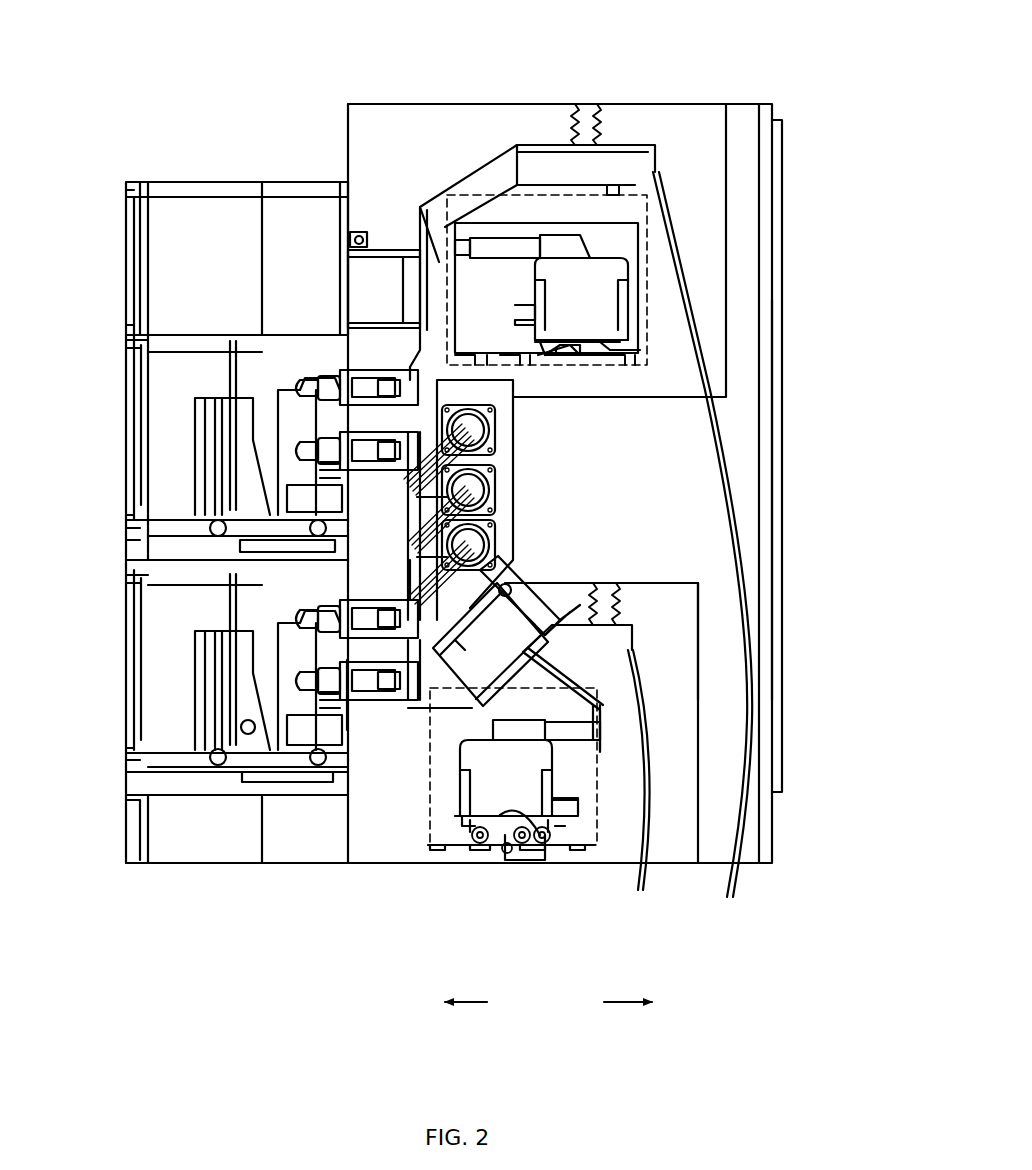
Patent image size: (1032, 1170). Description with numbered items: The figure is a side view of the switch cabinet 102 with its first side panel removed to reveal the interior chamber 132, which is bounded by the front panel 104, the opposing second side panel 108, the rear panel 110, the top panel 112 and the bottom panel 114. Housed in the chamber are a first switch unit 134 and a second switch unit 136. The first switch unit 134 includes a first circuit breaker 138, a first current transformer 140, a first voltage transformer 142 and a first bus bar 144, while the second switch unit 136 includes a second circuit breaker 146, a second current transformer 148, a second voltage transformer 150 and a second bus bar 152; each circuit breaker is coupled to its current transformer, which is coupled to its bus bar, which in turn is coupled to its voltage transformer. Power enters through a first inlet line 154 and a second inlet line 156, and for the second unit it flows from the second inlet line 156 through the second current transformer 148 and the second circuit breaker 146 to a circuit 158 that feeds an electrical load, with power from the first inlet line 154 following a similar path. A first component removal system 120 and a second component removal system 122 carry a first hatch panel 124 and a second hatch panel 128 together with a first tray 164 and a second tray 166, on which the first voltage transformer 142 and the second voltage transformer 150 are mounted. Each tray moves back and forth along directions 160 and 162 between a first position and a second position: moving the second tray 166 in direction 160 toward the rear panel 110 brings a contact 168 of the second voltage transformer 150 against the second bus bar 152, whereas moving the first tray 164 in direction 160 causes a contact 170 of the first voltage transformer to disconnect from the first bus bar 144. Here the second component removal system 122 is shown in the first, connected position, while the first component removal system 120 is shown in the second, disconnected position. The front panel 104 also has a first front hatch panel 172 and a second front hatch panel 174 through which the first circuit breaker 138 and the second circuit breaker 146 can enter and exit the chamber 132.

The switch cabinet 102 is at (790, 95).
The front panel 104 is at (134, 555).
The second side panel 108 is at (688, 115).
The rear panel 110 is at (775, 502).
The top panel 112 is at (595, 104).
The bottom panel 114 is at (328, 863).
The first component removal system 120 is at (600, 380).
The second component removal system 122 is at (520, 875).
The first hatch panel 124 is at (647, 232).
The second hatch panel 128 is at (600, 690).
The interior chamber 132 is at (662, 498).
The first switch unit 134 is at (328, 265).
The second switch unit 136 is at (568, 572).
The first circuit breaker 138 is at (195, 440).
The first current transformer 140 is at (383, 272).
The first voltage transformer 142 is at (610, 262).
The first bus bar 144 is at (420, 210).
The second circuit breaker 146 is at (195, 700).
The second current transformer 148 is at (468, 652).
The second voltage transformer 150 is at (470, 838).
The second bus bar 152 is at (606, 712).
The first inlet line 154 is at (732, 897).
The second inlet line 156 is at (642, 890).
The circuit 158 is at (497, 430).
The direction 160 is at (630, 1005).
The direction 162 is at (462, 1005).
The first tray 164 is at (612, 325).
The second tray 166 is at (565, 822).
The contact 168 is at (606, 728).
The contact 170 is at (475, 227).
The first front hatch panel 172 is at (134, 240).
The second front hatch panel 174 is at (134, 655).